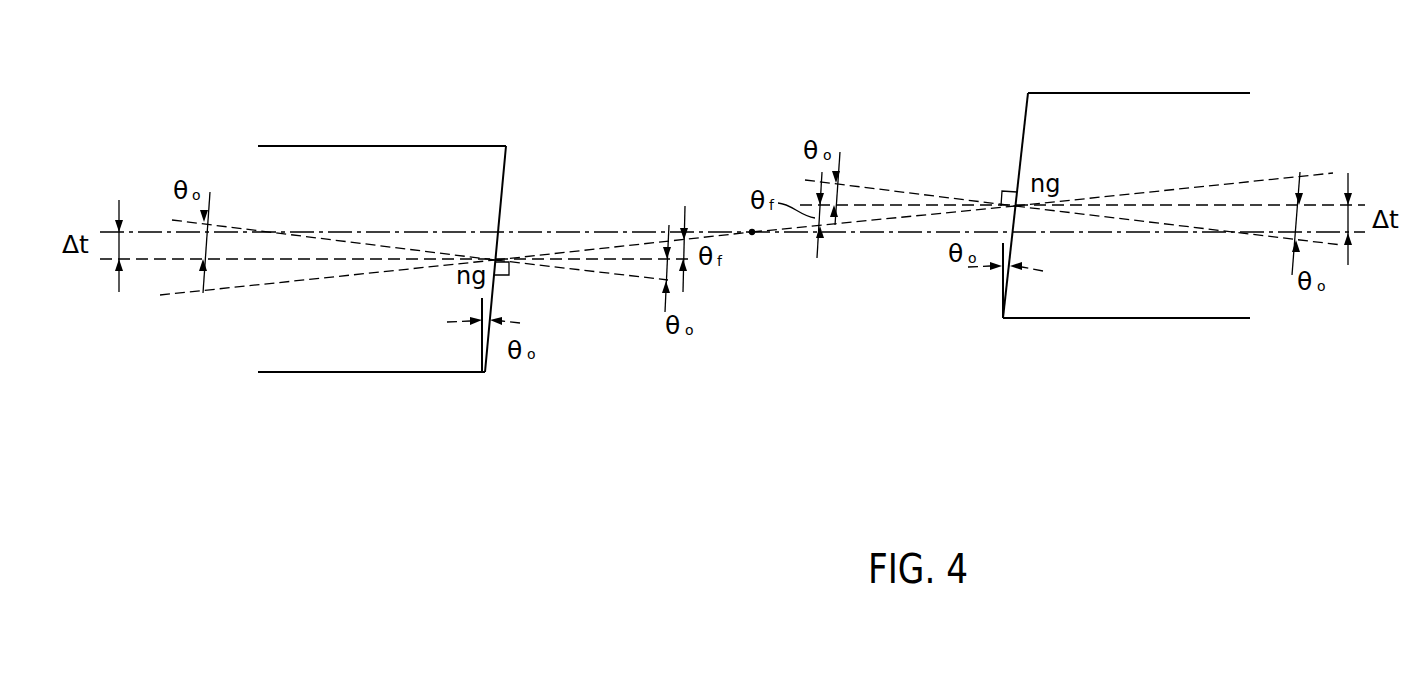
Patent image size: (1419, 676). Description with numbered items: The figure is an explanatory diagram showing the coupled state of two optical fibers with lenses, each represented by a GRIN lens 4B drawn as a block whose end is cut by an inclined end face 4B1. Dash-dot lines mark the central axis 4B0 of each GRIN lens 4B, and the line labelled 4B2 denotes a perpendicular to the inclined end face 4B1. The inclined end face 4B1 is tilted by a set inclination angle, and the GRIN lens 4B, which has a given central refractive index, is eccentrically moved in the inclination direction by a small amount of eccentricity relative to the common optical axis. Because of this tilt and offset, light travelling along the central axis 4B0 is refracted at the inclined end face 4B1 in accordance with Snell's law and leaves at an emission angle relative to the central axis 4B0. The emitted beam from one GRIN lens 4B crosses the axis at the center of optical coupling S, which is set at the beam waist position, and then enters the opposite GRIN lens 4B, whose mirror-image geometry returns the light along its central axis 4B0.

The GRIN lens 4B is at (1198, 93).
The inclined end face 4B1 is at (508, 170).
The central axis 4B0 is at (162, 261).
The perpendicular to the inclined end face 4B2 is at (605, 274).
The center of optical coupling S is at (753, 240).